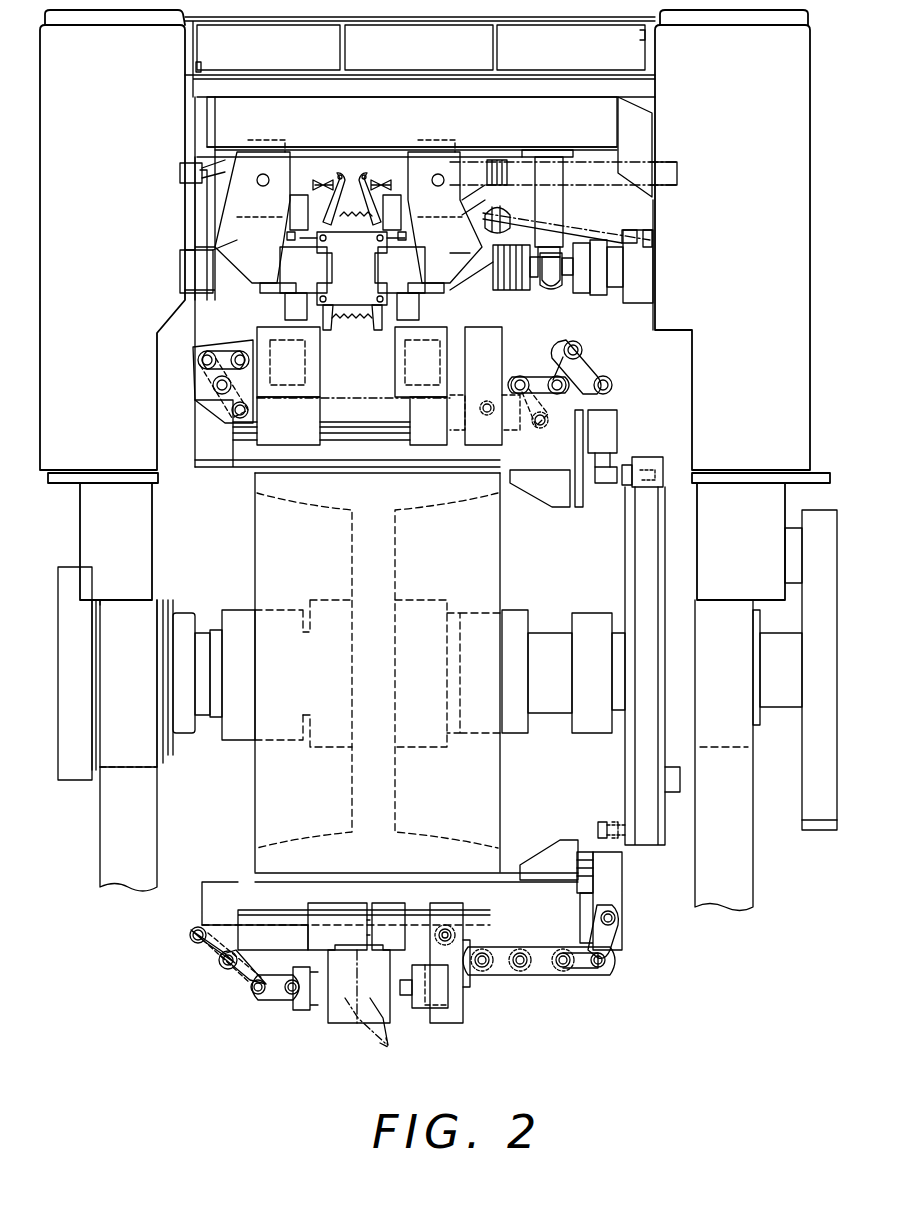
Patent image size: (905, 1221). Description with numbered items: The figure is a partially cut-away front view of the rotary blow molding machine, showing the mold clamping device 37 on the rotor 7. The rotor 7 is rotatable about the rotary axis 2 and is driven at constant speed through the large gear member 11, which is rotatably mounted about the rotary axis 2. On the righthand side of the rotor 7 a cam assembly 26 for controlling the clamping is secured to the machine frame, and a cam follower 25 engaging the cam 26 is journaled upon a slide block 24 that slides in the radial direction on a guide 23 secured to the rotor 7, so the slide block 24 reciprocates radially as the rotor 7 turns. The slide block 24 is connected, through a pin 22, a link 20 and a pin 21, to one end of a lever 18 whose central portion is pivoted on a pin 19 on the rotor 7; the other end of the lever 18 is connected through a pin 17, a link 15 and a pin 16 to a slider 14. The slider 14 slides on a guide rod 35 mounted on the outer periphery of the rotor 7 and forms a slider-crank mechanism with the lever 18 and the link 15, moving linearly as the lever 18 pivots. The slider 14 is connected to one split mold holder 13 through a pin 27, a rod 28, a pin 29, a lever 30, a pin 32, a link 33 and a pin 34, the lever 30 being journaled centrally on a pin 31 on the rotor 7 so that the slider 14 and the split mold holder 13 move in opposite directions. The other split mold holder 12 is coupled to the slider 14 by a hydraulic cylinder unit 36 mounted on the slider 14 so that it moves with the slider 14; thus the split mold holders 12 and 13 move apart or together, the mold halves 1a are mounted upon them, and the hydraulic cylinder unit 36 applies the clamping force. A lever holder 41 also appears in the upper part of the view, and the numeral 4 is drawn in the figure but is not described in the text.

The mold half 1a is at (387, 1042).
The rotary axis 2 is at (780, 700).
The gripping pincer 4 is at (360, 176).
The rotor 7 is at (258, 822).
The large gear member 11 is at (815, 832).
The split mold holder 12 is at (408, 1025).
The split mold holder 13 is at (305, 1013).
The slider 14 is at (468, 1000).
The link 15 is at (520, 975).
The pin 16 is at (478, 950).
The pin 17 is at (517, 950).
The lever 18 is at (590, 975).
The pin 19 is at (562, 950).
The link 20 is at (610, 942).
The pin 21 is at (606, 962).
The pin 22 is at (616, 918).
The guide 23 is at (584, 852).
The slide block 24 is at (618, 878).
The cam follower 25 is at (625, 840).
The cam assembly 26 is at (640, 550).
The pin 27 is at (440, 930).
The rod 28 is at (290, 935).
The pin 29 is at (190, 938).
The lever 30 is at (205, 950).
The pin 31 is at (200, 958).
The pin 32 is at (240, 972).
The link 33 is at (270, 988).
The pin 34 is at (296, 975).
The guide rod 35 is at (278, 892).
The hydraulic cylinder unit 36 is at (420, 1012).
The mold clamping device 37 is at (135, 910).
The lever holder 41 is at (327, 270).